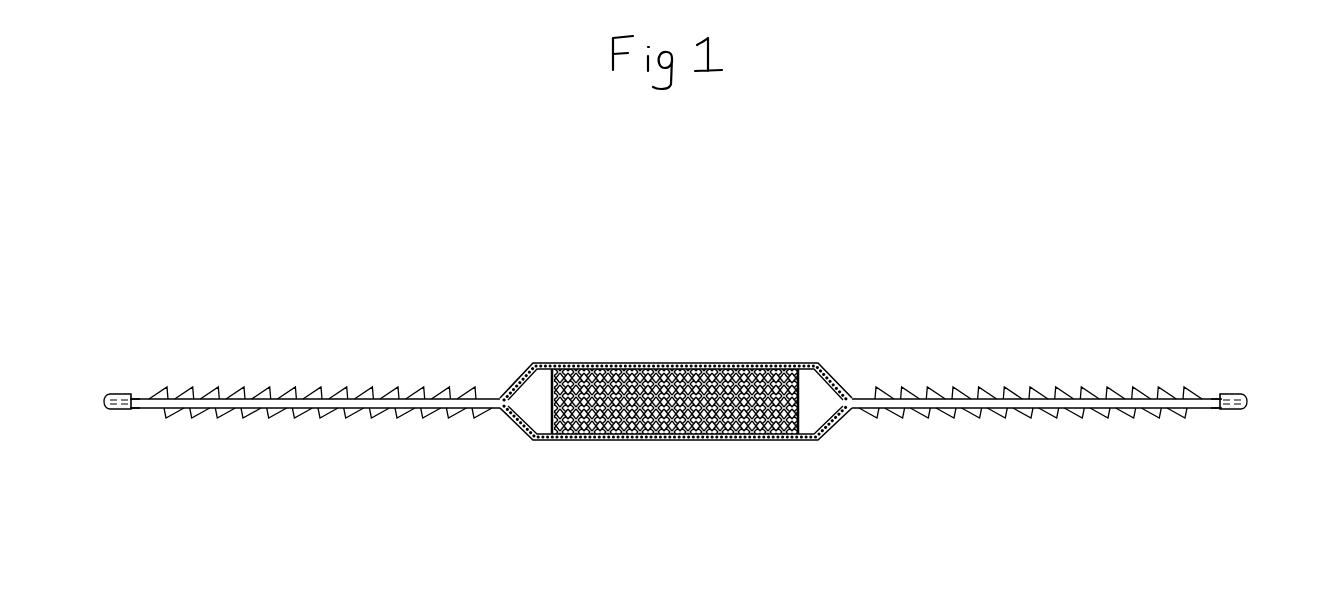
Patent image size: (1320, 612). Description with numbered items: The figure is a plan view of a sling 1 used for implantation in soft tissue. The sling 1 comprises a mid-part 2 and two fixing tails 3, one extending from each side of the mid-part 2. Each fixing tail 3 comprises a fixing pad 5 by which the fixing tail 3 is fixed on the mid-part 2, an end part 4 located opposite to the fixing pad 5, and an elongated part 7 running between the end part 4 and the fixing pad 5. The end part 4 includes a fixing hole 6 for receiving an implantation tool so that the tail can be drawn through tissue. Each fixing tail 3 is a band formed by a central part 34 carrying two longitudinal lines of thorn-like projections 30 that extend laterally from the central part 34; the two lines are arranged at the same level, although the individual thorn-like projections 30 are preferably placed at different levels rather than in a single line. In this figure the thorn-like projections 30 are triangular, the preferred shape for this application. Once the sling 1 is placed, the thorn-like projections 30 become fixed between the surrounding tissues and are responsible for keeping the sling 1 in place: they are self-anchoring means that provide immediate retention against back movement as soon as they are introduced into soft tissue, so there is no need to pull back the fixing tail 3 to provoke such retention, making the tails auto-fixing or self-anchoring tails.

The sling 1 is at (444, 429).
The mid-part 2 is at (697, 390).
The fixing tail 3 is at (1005, 383).
The end part 4 is at (677, 409).
The fixing pad 5 is at (826, 412).
The fixing hole 6 is at (97, 400).
The elongated part 7 is at (675, 442).
The thorn-like projections 30 is at (187, 395).
The central part 34 is at (215, 408).